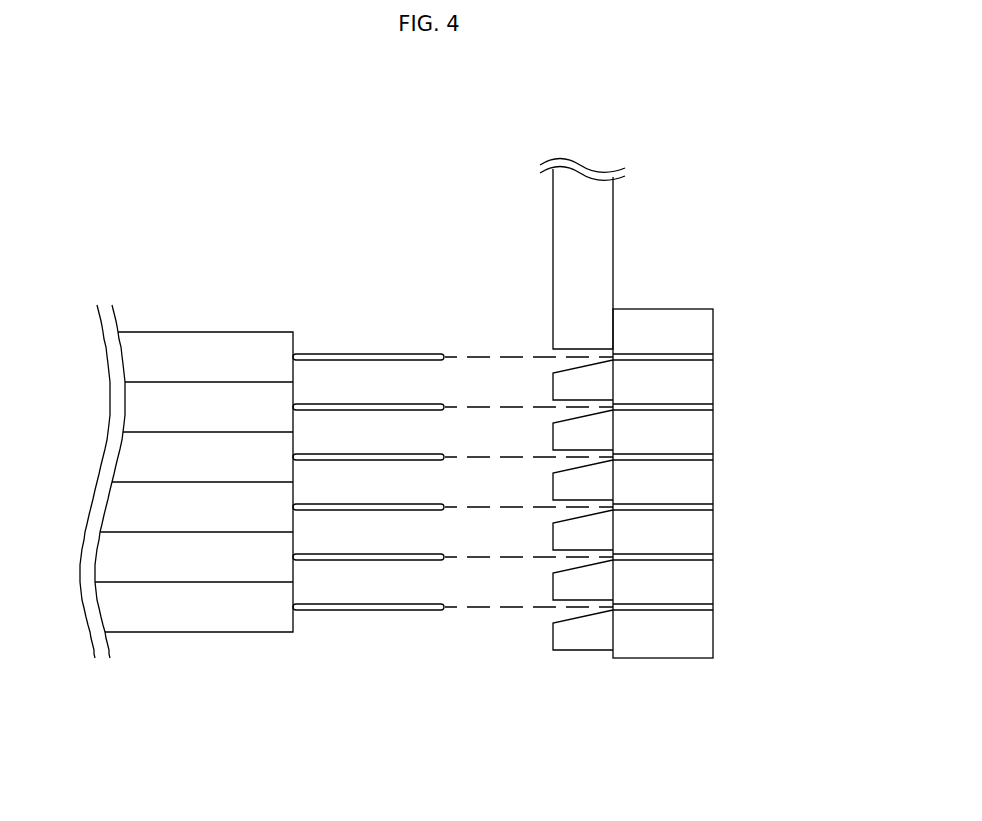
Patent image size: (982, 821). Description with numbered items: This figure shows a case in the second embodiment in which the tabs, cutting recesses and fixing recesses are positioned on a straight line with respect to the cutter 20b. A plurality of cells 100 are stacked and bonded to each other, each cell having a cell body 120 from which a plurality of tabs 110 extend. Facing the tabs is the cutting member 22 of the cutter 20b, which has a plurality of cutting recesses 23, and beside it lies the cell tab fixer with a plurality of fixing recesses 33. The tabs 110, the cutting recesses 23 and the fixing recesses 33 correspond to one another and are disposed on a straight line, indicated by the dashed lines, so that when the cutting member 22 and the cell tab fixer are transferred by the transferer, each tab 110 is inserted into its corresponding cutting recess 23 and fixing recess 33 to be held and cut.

The cell 100 is at (262, 547).
The tab 110 is at (330, 613).
The cell body 120 is at (233, 633).
The cutter 20b is at (492, 405).
The cutting member 22 is at (553, 258).
The cutting recess 23 is at (558, 368).
The fixing recess 33 is at (683, 353).